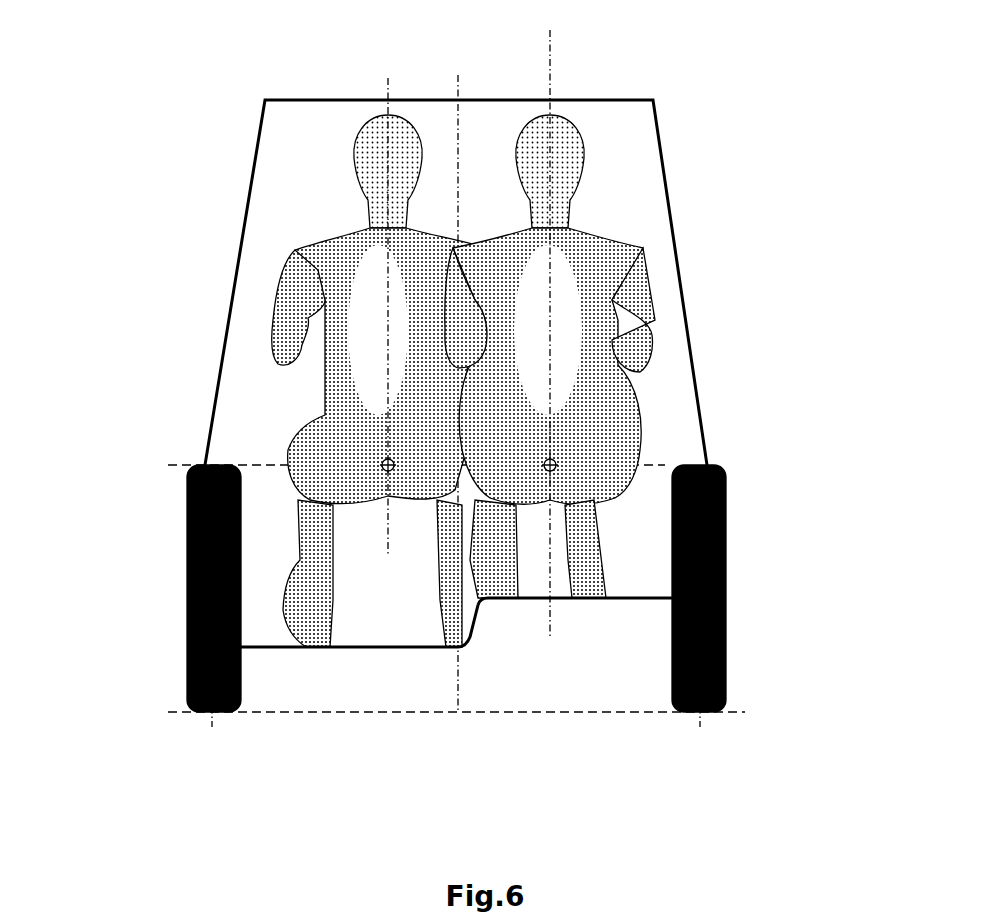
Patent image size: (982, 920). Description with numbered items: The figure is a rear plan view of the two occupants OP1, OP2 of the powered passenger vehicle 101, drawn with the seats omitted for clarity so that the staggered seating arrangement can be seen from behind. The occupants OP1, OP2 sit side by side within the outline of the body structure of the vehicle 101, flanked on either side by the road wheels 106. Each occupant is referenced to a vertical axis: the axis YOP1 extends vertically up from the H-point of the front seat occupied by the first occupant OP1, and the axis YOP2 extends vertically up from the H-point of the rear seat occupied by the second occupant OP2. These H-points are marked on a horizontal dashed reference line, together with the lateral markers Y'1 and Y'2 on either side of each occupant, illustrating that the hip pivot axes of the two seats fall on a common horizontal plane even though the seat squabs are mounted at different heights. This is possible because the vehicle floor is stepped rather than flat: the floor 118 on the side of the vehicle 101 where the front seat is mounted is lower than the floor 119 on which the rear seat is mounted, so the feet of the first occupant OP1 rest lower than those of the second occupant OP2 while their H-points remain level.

The powered passenger vehicle 101 is at (250, 176).
The road wheels 106 is at (186, 632).
The floor 118 is at (368, 648).
The floor 119 is at (632, 600).
The occupant OP1 is at (270, 318).
The occupant OP2 is at (650, 320).
The vertical axis YOP1 is at (388, 76).
The vertical axis YOP2 is at (550, 60).
The first occupant lateral reference Y'1 is at (336, 436).
The second occupant lateral reference Y'2 is at (591, 436).
The element H-points is at (550, 471).